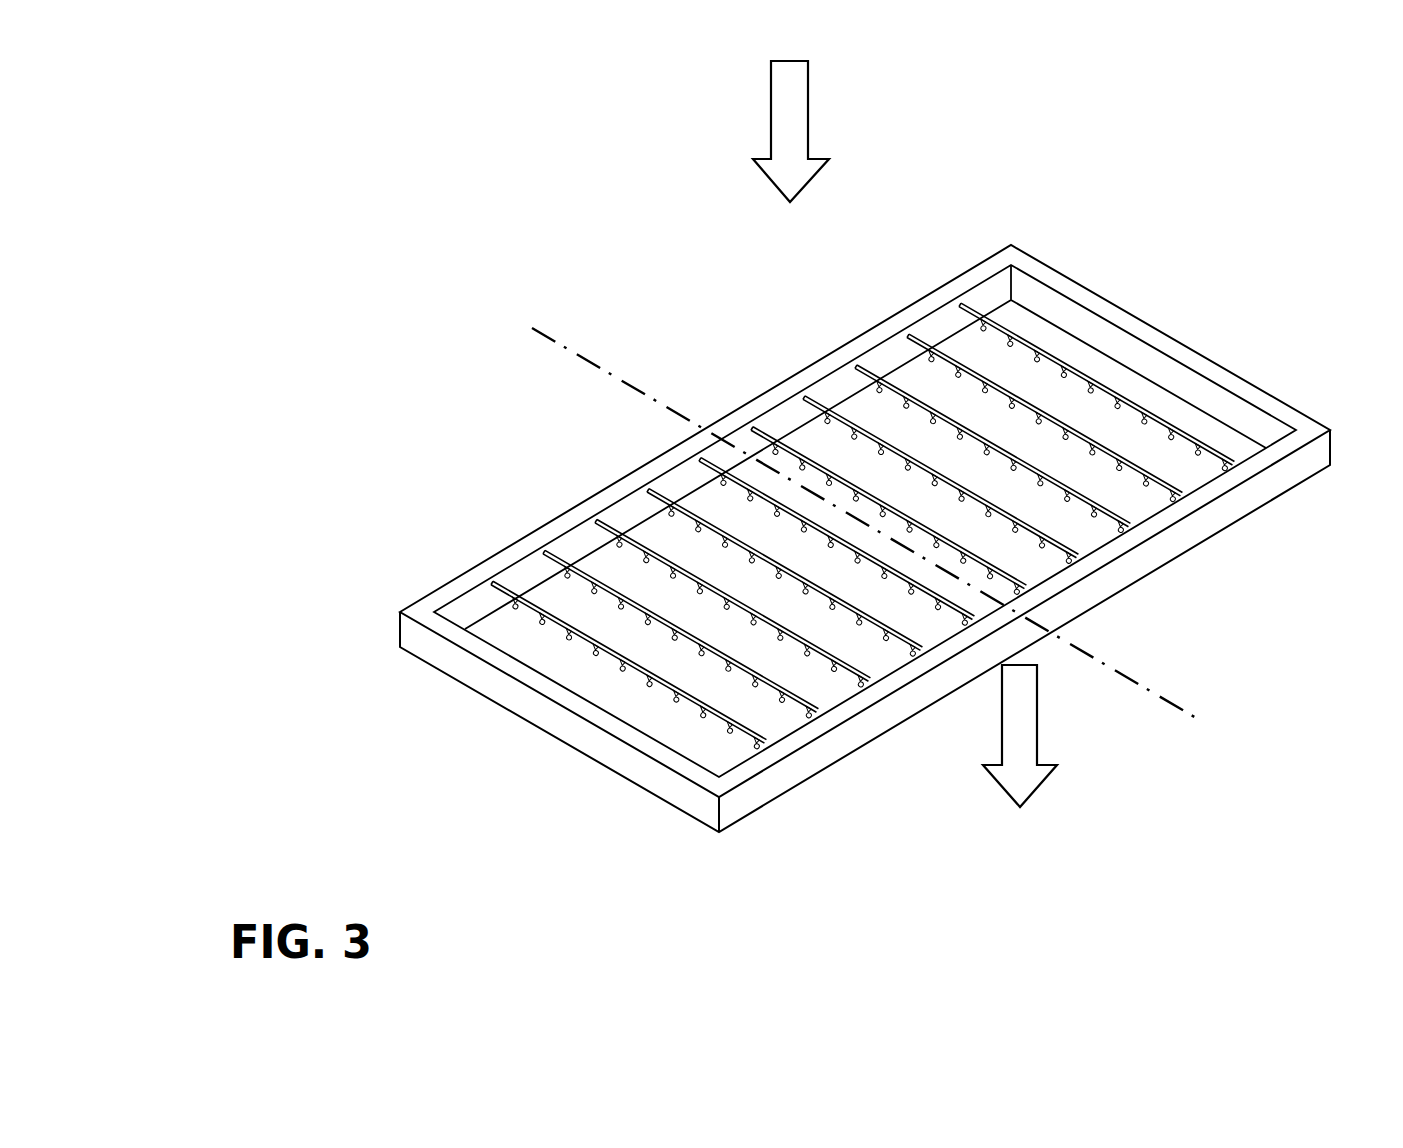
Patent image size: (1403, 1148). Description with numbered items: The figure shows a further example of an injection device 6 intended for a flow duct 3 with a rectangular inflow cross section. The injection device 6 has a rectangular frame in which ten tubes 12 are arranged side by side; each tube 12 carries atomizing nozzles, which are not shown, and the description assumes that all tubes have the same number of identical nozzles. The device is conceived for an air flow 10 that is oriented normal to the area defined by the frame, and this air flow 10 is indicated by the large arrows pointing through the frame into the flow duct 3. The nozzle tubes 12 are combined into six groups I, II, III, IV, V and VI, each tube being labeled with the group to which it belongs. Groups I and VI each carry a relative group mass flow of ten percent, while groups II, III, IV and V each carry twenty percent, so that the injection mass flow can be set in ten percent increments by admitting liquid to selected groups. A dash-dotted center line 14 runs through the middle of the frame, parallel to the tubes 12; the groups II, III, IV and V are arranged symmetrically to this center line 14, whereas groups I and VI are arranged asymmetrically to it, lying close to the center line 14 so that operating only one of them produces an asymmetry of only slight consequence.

The injection device 6 is at (1225, 553).
The tubes 12 is at (1077, 495).
The air flow 10 is at (798, 113).
The flow duct 3 is at (724, 140).
The center line 14 is at (866, 529).
The group I is at (760, 438).
The group II is at (868, 378).
The group III is at (987, 322).
The group IV is at (830, 410).
The group V is at (935, 352).
The group VI is at (722, 476).